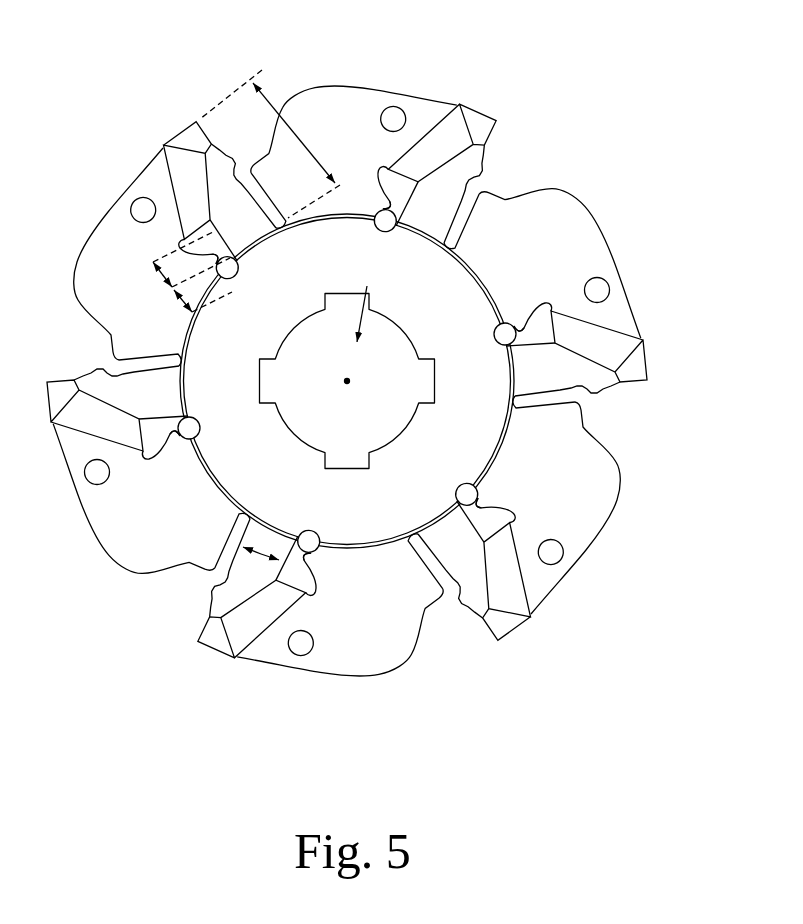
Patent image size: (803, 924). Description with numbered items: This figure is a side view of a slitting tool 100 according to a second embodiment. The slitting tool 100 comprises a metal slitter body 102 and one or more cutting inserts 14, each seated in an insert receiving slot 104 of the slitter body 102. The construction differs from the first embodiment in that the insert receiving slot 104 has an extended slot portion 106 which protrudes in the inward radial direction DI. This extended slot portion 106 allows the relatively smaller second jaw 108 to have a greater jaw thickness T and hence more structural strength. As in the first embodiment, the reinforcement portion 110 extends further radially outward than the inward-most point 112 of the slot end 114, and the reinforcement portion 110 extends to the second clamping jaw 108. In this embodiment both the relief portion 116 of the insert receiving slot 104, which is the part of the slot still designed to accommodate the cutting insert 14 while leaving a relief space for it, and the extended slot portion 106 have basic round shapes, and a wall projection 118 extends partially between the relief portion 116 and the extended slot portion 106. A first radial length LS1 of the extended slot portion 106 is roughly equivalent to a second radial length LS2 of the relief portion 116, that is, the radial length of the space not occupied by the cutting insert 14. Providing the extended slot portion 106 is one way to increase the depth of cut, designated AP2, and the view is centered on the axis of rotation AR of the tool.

The slitting tool 100 is at (620, 90).
The slitter body 102 is at (408, 87).
The insert receiving slot 104 is at (383, 178).
The cutting insert 14 is at (476, 100).
The extended slot portion 106 is at (386, 222).
The second jaw 108 is at (207, 588).
The reinforcement portion 110 is at (250, 468).
The inward-most point 112 is at (317, 535).
The slot end 114 is at (307, 527).
The relief portion 116 is at (212, 244).
The wall projection 118 is at (275, 575).
The jaw thickness T is at (243, 553).
The depth of cut AP2 is at (271, 144).
The first radial length LS1 is at (181, 298).
The second radial length LS2 is at (162, 280).
The inward radial direction DI is at (350, 314).
The axis of rotation AR is at (356, 382).